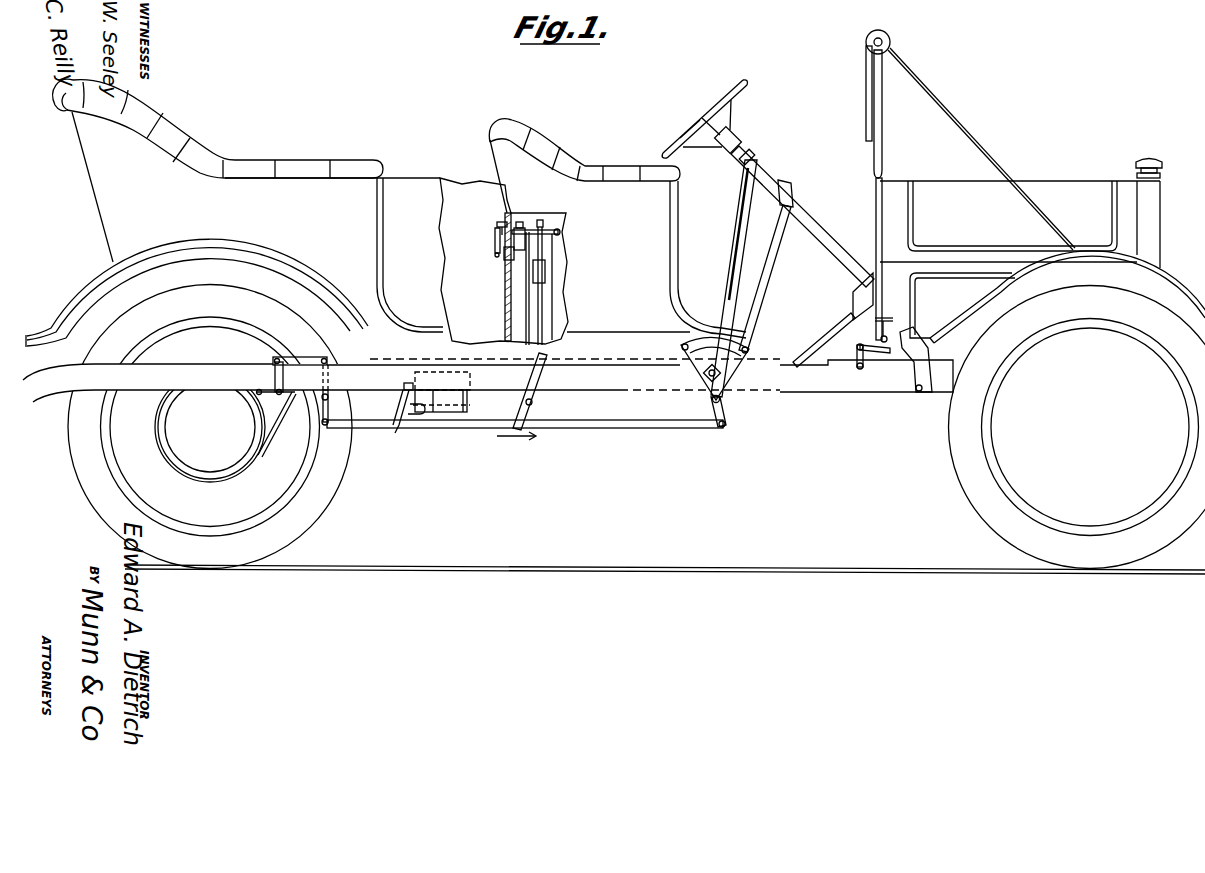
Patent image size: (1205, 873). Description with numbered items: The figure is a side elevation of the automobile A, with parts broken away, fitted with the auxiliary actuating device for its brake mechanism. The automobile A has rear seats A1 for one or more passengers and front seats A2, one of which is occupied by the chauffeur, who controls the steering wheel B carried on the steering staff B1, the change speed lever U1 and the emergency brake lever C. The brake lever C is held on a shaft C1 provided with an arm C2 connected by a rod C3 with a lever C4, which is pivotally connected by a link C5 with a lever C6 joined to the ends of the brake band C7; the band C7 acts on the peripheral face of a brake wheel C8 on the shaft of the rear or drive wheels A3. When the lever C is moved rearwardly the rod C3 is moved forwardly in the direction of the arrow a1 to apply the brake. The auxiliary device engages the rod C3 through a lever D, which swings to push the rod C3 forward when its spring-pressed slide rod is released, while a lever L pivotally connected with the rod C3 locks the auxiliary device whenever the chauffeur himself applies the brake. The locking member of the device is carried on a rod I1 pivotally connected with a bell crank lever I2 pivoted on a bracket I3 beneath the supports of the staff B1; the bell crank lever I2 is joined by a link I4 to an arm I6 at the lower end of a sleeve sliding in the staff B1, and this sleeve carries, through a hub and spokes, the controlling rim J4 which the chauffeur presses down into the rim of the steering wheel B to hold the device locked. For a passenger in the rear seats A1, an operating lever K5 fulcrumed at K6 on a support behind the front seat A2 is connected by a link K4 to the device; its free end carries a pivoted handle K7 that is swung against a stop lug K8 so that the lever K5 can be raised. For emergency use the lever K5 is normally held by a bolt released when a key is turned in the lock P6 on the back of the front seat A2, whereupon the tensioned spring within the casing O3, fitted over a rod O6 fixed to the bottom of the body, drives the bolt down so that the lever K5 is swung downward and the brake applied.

The automobile A is at (571, 276).
The rear seats A1 is at (218, 128).
The front seats A2 is at (612, 168).
The rear or drive wheels A3 is at (312, 500).
The steering wheel B is at (744, 84).
The steering staff B1 is at (830, 214).
The controlling rim J4 is at (690, 118).
The change speed lever U1 is at (732, 268).
The emergency brake lever C is at (758, 283).
The shaft C1 is at (722, 400).
The arm C2 is at (728, 425).
The rod C3 is at (606, 426).
The lever C4 is at (330, 409).
The link C5 is at (305, 357).
The lever C6 is at (275, 380).
The brake band C7 is at (283, 431).
The brake wheel C8 is at (256, 431).
The lever D is at (397, 394).
The lever L is at (521, 405).
The arrow a1 is at (516, 445).
The rod I1 is at (811, 393).
The bell crank lever I2 is at (866, 363).
The bracket I3 is at (855, 341).
The link I4 is at (888, 352).
The arm I6 is at (856, 308).
The link K4 is at (526, 300).
The operating lever K5 is at (519, 227).
The fulcrum K6 is at (560, 233).
The pivoted handle K7 is at (494, 244).
The stop lug K8 is at (498, 225).
The lock P6 is at (504, 260).
The casing O3 is at (535, 272).
The rod O6 is at (543, 335).